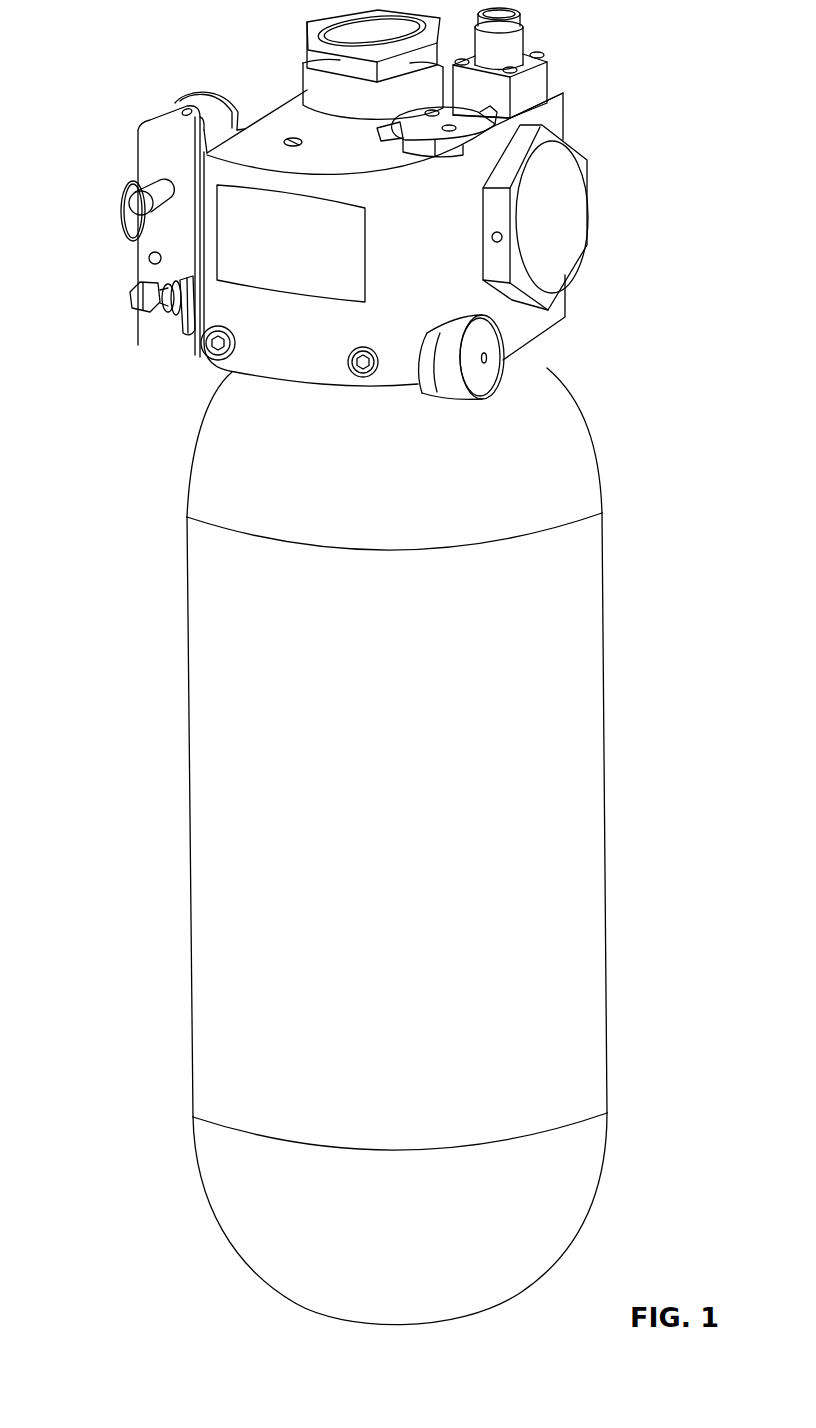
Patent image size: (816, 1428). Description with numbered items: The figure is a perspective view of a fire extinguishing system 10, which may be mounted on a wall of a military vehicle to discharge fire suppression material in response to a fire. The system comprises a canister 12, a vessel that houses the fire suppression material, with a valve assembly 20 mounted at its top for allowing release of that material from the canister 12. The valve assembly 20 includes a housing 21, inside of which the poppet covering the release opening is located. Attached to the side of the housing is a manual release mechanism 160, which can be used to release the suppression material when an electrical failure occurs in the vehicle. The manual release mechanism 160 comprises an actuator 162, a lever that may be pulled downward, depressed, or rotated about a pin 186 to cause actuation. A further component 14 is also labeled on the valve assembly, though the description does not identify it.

The fire extinguishing system 10 is at (386, 666).
The canister 12 is at (575, 446).
The actuator knob 14 is at (490, 368).
The valve assembly 20 is at (326, 203).
The housing 21 is at (207, 230).
The manual release mechanism 160 is at (147, 140).
The actuator 162 is at (172, 108).
The pin 186 is at (140, 262).